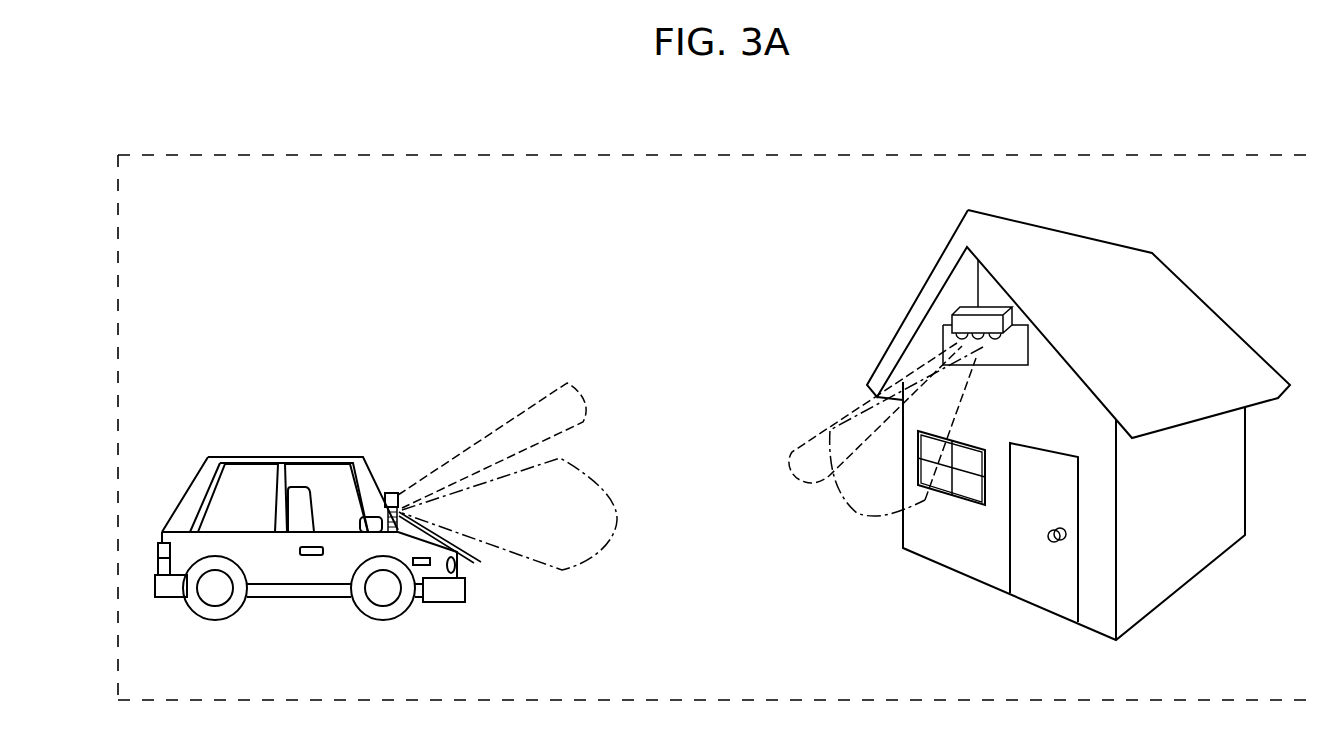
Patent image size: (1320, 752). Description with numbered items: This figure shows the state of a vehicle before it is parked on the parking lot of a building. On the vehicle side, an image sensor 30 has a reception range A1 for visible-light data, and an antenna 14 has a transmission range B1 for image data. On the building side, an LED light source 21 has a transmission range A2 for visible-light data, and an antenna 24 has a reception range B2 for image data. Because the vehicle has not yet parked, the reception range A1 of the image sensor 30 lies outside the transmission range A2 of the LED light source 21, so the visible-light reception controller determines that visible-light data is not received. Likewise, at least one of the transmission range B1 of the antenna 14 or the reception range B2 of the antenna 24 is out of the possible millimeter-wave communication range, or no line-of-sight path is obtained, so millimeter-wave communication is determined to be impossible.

The antenna 14 is at (393, 492).
The image sensor 30 is at (455, 545).
The reception range A1 is at (603, 487).
The transmission range B1 is at (540, 403).
The LED light source 21 is at (1018, 343).
The antenna 24 is at (957, 335).
The transmission range A2 is at (833, 512).
The reception range B2 is at (843, 418).